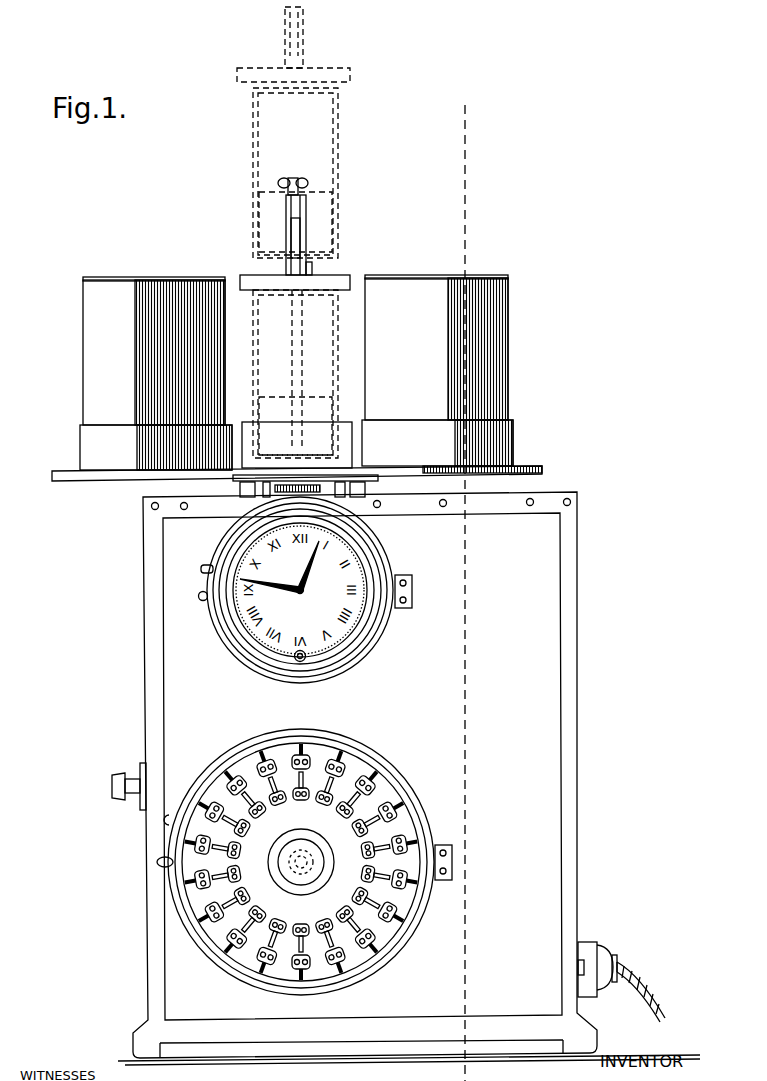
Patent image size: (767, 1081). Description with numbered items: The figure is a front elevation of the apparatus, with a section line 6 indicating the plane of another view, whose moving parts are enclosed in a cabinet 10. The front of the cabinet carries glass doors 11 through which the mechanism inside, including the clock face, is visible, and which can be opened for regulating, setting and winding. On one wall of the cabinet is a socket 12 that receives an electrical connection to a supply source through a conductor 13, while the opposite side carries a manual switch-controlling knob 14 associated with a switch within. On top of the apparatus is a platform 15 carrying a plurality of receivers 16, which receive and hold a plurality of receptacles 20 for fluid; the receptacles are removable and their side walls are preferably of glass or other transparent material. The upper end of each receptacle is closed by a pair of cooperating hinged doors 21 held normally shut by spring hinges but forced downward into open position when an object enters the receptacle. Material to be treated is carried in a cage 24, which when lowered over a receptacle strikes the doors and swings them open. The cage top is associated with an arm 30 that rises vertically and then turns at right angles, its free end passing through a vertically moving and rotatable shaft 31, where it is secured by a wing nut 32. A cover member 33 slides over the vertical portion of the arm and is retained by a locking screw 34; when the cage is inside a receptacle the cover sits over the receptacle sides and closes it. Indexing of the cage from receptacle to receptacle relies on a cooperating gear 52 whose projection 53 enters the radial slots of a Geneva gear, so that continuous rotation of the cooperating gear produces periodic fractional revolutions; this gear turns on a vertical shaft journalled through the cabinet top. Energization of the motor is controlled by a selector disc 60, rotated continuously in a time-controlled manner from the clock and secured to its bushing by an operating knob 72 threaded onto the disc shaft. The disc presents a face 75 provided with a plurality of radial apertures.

The section line 6 is at (494, 148).
The cabinet 10 is at (548, 772).
The glass doors 11 is at (368, 633).
The socket 12 is at (588, 946).
The conductor 13 is at (647, 995).
The manual switch-controlling knob 14 is at (122, 773).
The platform 15 is at (101, 481).
The receivers 16 is at (92, 441).
The receptacles 20 is at (93, 360).
The hinged doors 21 is at (110, 278).
The cage 24 is at (338, 143).
The arm 30 is at (291, 230).
The shaft 31 is at (287, 207).
The wing nut 32 is at (300, 184).
The cover member 33 is at (258, 276).
The locking screw 34 is at (313, 270).
The cooperating gear 52 is at (260, 488).
The projection 53 is at (320, 492).
The selector disc 60 is at (402, 822).
The operating knob 72 is at (280, 862).
The face 75 is at (301, 811).